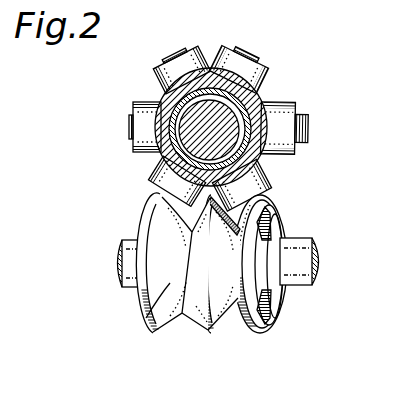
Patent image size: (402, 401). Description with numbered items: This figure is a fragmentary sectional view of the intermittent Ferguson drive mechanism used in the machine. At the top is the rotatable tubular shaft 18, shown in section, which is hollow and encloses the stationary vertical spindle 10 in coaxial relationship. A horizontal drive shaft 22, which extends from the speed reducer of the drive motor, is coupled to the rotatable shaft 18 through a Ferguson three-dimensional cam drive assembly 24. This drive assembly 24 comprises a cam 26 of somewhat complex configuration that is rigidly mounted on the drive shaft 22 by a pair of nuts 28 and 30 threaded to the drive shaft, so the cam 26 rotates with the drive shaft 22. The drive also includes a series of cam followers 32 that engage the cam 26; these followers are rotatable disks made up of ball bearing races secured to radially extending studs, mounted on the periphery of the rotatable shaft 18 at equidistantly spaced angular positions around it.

The stationary vertical spindle 10 is at (180, 100).
The rotatable tubular shaft 18 is at (258, 95).
The horizontal drive shaft 22 is at (297, 254).
The Ferguson three-dimensional cam drive assembly 24 is at (221, 256).
The cam 26 is at (142, 324).
The nut 28 is at (283, 234).
The nut 30 is at (133, 230).
The cam followers 32 is at (228, 49).